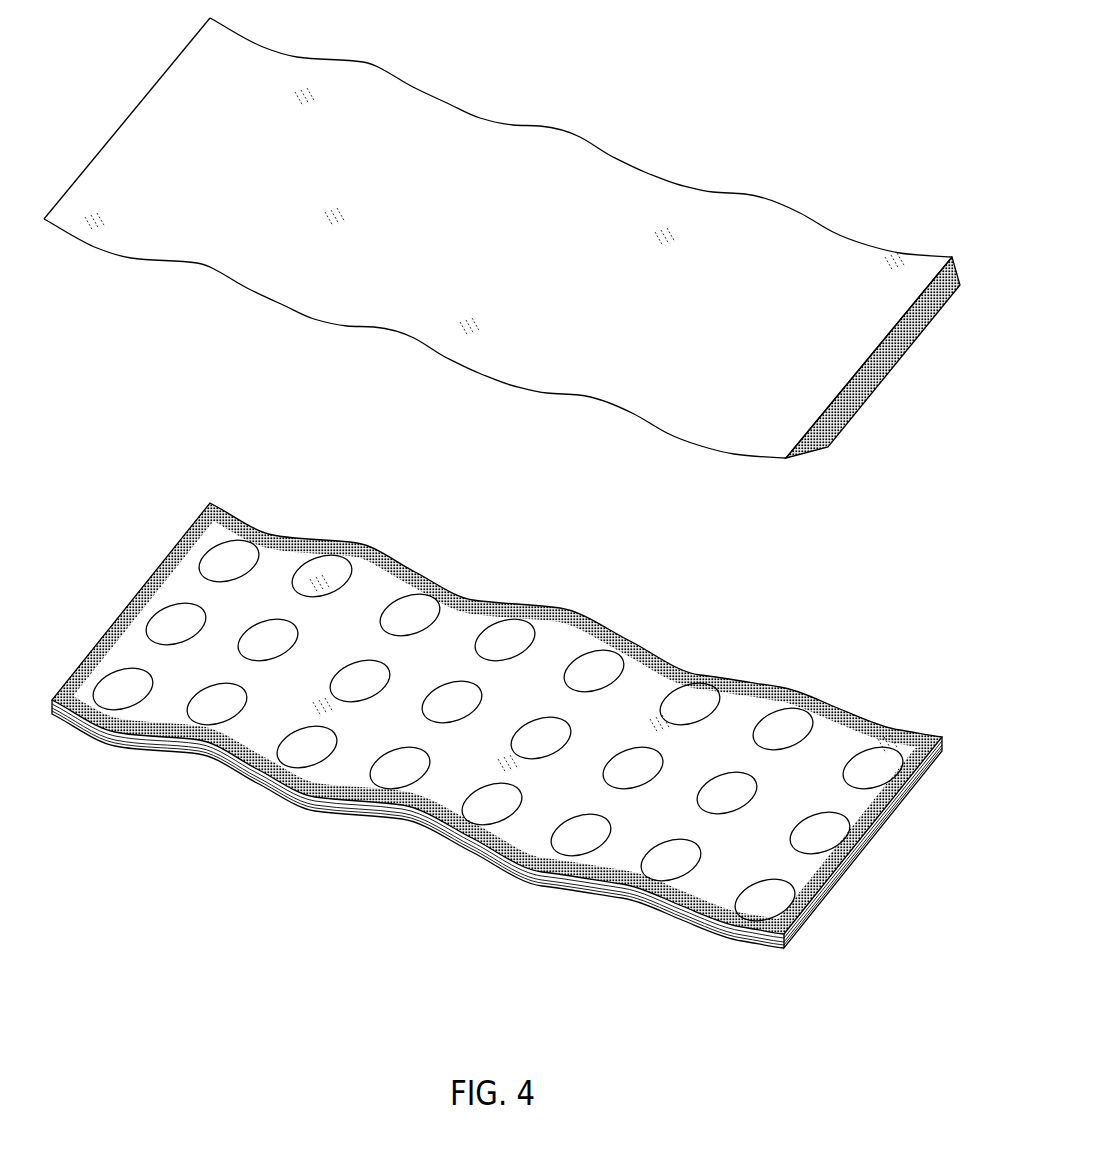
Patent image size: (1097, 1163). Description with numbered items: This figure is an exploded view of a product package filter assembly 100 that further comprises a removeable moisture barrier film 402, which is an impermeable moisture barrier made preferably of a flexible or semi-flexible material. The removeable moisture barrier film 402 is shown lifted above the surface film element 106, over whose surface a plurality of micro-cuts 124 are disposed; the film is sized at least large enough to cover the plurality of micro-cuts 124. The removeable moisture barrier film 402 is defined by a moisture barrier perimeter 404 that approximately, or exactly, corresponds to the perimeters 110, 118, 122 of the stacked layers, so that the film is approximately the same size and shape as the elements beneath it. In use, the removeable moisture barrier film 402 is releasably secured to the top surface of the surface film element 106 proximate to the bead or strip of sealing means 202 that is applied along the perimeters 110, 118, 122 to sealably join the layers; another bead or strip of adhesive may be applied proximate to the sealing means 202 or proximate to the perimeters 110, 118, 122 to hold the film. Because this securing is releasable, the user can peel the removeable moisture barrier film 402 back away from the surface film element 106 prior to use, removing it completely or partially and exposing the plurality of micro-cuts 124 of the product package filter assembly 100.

The product package filter assembly 100 is at (884, 39).
The removeable moisture barrier film 402 is at (577, 133).
The moisture barrier perimeter 404 is at (885, 357).
The surface film element 106 is at (862, 800).
The plurality of micro-cuts 124 is at (700, 690).
The sealing means 202 is at (838, 868).
The perimeter 110 is at (532, 859).
The perimeter 118 is at (497, 825).
The perimeter 122 is at (497, 828).